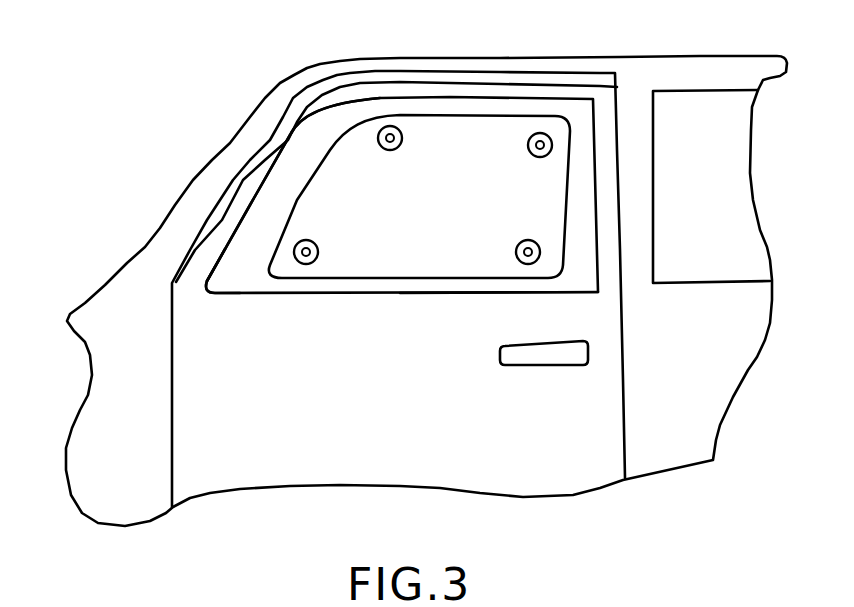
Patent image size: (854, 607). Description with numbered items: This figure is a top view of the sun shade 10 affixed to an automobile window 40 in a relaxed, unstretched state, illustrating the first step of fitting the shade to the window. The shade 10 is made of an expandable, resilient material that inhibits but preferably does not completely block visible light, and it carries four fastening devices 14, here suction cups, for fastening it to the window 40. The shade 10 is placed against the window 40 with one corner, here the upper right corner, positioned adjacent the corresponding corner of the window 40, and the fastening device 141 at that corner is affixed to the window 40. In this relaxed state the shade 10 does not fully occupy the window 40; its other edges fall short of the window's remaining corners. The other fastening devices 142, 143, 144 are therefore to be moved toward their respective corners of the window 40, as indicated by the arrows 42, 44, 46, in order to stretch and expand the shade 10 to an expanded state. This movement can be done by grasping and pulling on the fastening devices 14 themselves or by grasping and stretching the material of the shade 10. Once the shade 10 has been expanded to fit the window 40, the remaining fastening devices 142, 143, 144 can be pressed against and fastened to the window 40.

The sun shade 10 is at (470, 117).
The fastening devices 14 is at (423, 195).
The fastening device 141 is at (531, 154).
The fastening device 142 is at (515, 248).
The fastening device 143 is at (319, 248).
The fastening device 144 is at (383, 151).
The window 40 is at (287, 185).
The arrow 42 is at (575, 287).
The arrow 44 is at (258, 268).
The arrow 46 is at (343, 140).